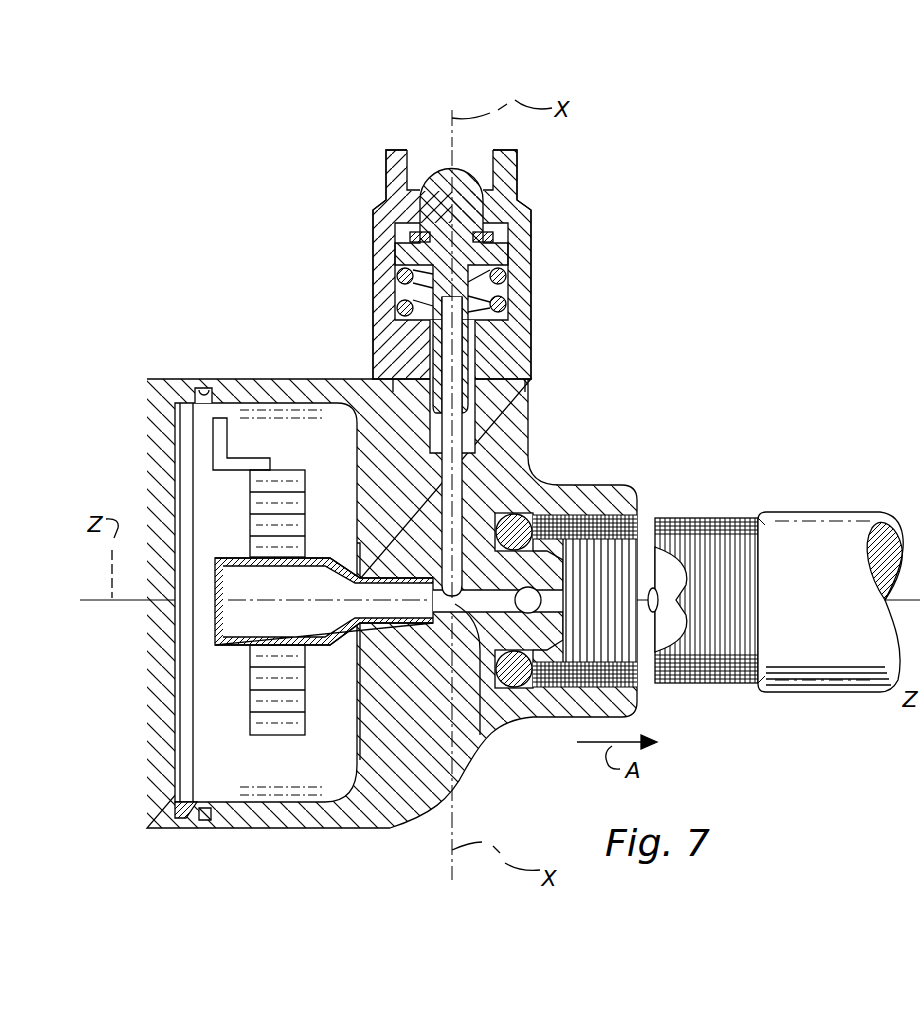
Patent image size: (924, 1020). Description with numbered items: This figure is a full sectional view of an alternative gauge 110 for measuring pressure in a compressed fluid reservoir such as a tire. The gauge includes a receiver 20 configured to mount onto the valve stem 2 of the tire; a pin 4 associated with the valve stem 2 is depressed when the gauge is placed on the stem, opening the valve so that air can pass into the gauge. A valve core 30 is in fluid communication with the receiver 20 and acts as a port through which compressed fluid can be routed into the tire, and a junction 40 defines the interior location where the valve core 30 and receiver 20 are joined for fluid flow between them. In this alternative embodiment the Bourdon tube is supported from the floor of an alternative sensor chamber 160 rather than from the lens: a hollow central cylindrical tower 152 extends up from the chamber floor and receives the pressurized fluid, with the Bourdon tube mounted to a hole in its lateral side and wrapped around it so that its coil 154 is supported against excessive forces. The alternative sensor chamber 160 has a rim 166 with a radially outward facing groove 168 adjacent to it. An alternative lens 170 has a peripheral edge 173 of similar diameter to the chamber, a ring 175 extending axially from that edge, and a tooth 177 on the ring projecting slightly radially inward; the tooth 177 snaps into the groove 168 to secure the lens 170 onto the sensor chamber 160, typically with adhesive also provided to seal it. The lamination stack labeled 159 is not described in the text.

The valve stem 2 is at (796, 525).
The pin 4 is at (649, 545).
The receiver 20 is at (590, 515).
The valve core 30 is at (372, 231).
The junction 40 is at (481, 745).
The alternative gauge 110 is at (610, 319).
The central cylindrical tower 152 is at (240, 655).
The coil 154 is at (272, 735).
The upper rotor lamination stack 159 is at (255, 496).
The alternative sensor chamber 160 is at (297, 778).
The rim 166 is at (178, 820).
The groove 168 is at (206, 822).
The alternative lens 170 is at (147, 430).
The peripheral edge 173 is at (155, 377).
The ring 175 is at (206, 386).
The tooth 177 is at (212, 410).